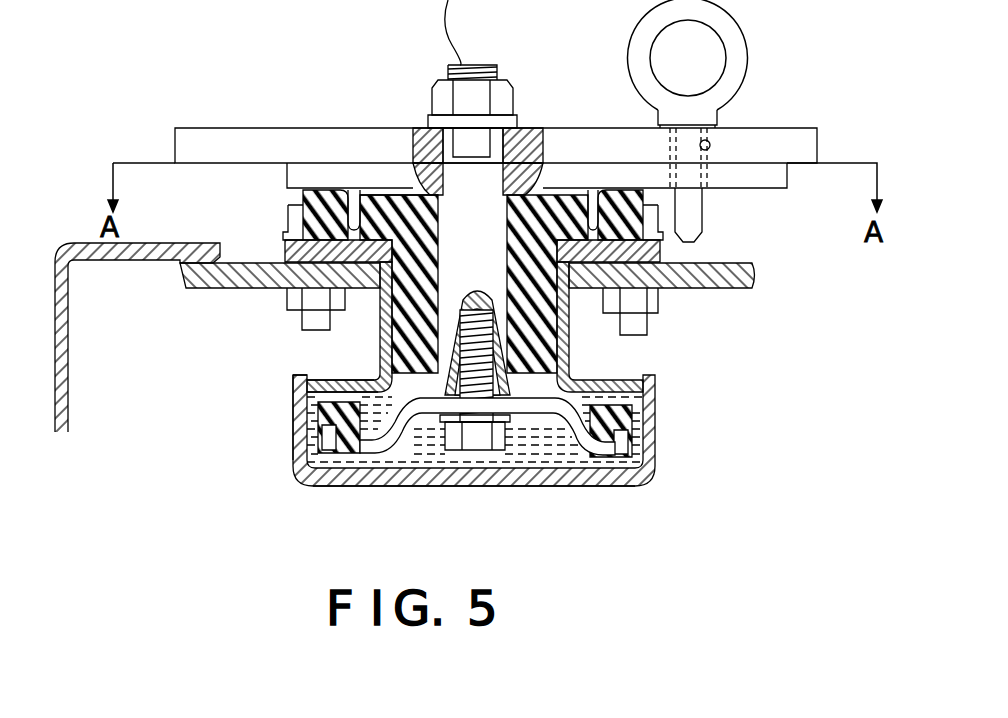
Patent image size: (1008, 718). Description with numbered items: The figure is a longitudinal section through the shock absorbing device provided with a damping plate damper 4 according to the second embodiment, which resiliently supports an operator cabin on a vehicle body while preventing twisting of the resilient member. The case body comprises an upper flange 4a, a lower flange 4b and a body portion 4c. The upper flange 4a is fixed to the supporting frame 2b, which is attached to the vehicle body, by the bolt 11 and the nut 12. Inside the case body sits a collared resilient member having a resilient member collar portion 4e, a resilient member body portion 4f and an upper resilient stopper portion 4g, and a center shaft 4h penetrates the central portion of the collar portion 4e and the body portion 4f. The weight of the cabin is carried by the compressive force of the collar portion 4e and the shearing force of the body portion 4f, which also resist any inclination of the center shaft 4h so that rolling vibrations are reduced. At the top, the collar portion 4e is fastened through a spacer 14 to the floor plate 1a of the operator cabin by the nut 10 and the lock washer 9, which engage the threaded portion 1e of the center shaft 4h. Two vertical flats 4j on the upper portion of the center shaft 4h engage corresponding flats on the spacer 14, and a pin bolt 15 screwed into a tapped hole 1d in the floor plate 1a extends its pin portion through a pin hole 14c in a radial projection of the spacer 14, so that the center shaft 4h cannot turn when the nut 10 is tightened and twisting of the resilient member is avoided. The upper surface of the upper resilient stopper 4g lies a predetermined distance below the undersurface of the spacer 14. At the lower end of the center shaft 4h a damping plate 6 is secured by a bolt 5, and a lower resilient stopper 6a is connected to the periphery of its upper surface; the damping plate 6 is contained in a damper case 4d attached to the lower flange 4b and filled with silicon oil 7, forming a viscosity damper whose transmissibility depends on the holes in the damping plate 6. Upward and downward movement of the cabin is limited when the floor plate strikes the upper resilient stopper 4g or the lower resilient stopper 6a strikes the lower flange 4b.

The floor plate 1a is at (784, 146).
The tapped hole 1d is at (710, 148).
The threaded stud 1e is at (483, 66).
The supporting frame 2b is at (748, 290).
The damping plate damper 4 is at (688, 390).
The upper flange 4a is at (287, 254).
The lower flange 4b is at (660, 392).
The body portion 4c is at (380, 320).
The damper case 4d is at (650, 466).
The resilient member collar portion 4e is at (373, 194).
The resilient member body portion 4f is at (378, 372).
The upper resilient stopper portion 4g is at (303, 200).
The center shaft 4h is at (490, 215).
The vertical flats 4j is at (380, 194).
The bolt 5 is at (478, 440).
The damping plate 6 is at (385, 440).
The lower resilient stopper 6a is at (293, 422).
The silicon oil 7 is at (537, 455).
The lock washer 9 is at (432, 123).
The nut 10 is at (446, 84).
The bolt 11 is at (288, 222).
The nut 12 is at (287, 300).
The spacer 14 is at (780, 178).
The pin hole 14c is at (700, 198).
The pin bolt 15 is at (735, 42).